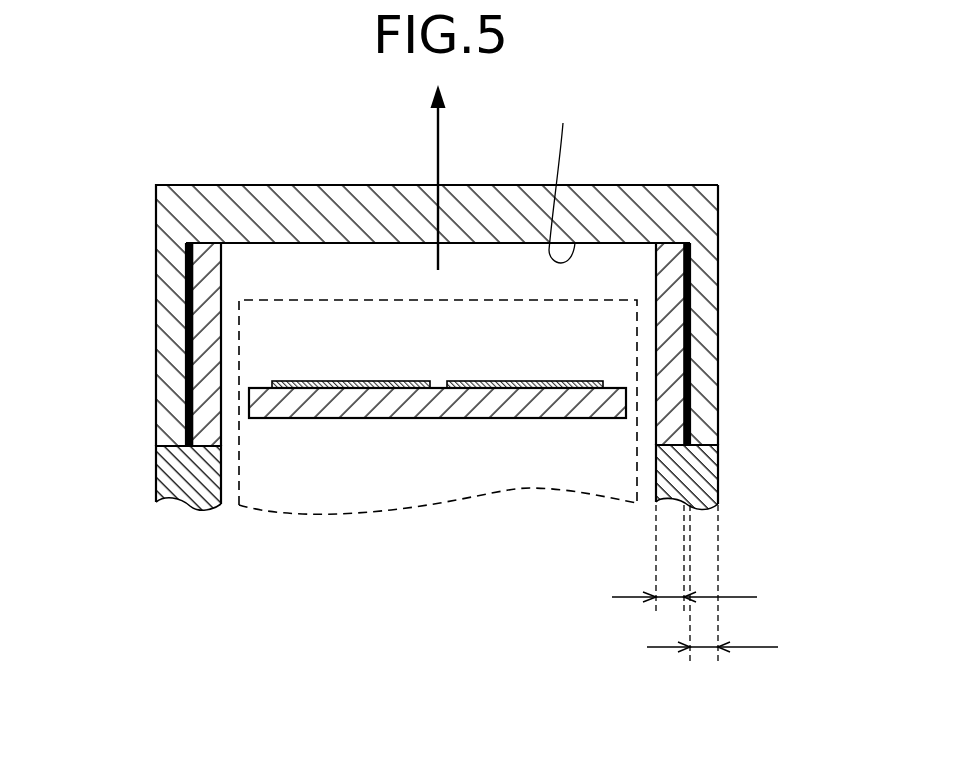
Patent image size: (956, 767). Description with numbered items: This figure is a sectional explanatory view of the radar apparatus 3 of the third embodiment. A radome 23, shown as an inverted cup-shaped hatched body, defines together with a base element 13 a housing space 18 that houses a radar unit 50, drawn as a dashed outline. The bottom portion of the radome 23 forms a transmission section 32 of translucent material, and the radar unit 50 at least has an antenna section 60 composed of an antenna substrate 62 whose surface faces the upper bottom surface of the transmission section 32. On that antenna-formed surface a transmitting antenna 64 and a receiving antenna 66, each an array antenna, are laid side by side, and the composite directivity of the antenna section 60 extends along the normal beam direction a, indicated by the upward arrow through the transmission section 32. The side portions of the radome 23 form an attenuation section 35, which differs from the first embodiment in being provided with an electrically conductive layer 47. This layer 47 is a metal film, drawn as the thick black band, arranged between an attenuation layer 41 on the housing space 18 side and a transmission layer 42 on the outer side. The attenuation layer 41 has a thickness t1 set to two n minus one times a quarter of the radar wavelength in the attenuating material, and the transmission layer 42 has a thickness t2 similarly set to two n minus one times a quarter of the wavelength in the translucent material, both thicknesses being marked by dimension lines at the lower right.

The radar apparatus 3 is at (98, 125).
The radome 23 is at (132, 183).
The transmission section 32 is at (252, 185).
The housing space 18 is at (566, 179).
The beam direction a is at (438, 158).
The base 13 is at (132, 475).
The attenuation section 35 is at (831, 240).
The attenuation layer 41 is at (667, 302).
The electrically conductive layer 47 is at (687, 325).
The transmission layer 42 is at (705, 350).
The radar unit 50 is at (333, 298).
The antenna section 60 is at (353, 357).
The antenna substrate 62 is at (518, 418).
The transmitting antenna 64 is at (370, 381).
The receiving antenna 66 is at (508, 381).
The thickness of attenuation layer t1 is at (668, 597).
The thickness of transmission layer t2 is at (702, 647).